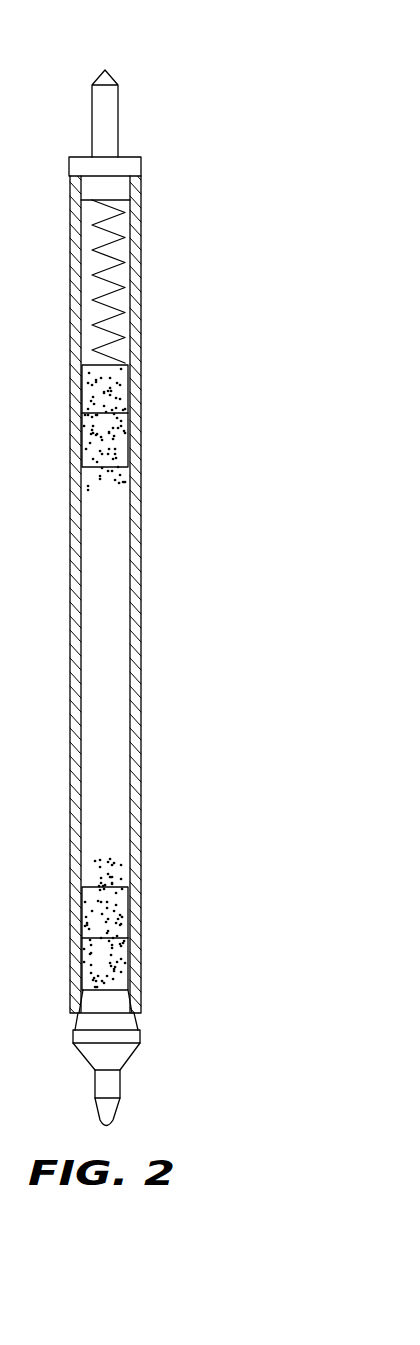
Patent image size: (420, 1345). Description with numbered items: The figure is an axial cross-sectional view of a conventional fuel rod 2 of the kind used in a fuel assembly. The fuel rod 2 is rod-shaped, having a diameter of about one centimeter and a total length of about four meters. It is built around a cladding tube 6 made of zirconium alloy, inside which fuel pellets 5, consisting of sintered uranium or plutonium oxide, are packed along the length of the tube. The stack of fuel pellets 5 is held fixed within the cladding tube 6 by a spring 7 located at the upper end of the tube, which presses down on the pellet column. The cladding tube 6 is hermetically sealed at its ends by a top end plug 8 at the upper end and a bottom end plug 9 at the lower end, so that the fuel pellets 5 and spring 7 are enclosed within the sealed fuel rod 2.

The fuel rod 2 is at (222, 76).
The fuel pellets 5 is at (122, 443).
The cladding tube 6 is at (141, 512).
The spring 7 is at (120, 316).
The top end plug 8 is at (143, 167).
The bottom end plug 9 is at (122, 1058).